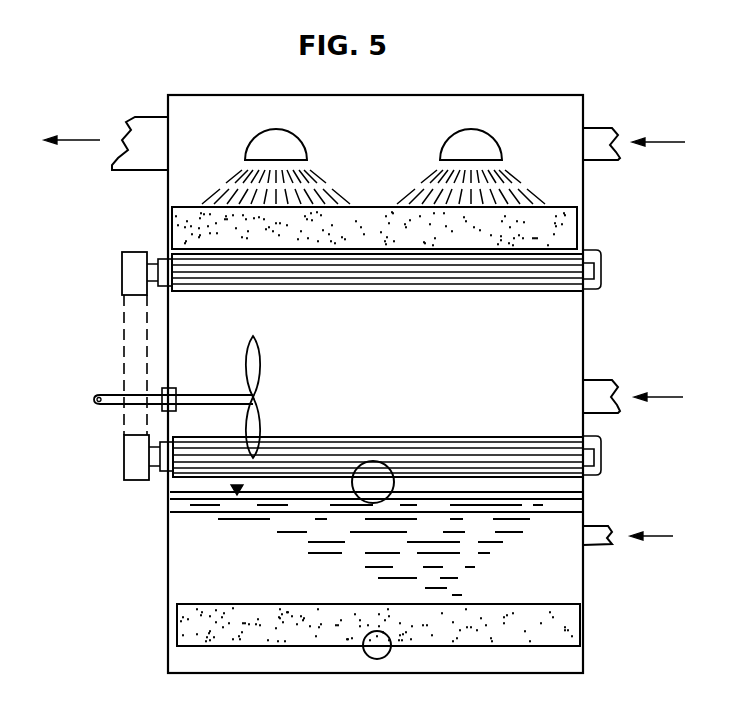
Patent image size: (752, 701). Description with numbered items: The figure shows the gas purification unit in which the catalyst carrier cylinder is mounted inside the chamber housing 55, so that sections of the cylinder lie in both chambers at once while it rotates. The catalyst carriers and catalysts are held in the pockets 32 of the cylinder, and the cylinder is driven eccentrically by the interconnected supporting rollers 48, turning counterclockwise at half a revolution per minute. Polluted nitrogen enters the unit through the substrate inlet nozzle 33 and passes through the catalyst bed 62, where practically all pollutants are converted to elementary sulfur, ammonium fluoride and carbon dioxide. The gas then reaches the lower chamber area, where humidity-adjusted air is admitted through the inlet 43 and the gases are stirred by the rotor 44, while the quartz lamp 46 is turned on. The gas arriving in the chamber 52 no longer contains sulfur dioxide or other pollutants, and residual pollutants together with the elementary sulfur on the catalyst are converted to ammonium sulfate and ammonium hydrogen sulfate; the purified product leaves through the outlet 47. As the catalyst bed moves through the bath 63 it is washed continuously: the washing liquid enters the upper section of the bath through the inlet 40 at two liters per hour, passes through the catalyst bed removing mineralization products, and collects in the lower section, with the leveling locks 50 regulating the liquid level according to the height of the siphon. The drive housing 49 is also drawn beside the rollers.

The pockets 32 is at (562, 233).
The substrate inlet nozzle 33 is at (603, 128).
The inlet 40 is at (601, 546).
The inlet 43 is at (612, 380).
The rotor 44 is at (248, 364).
The quartz lamp 46 is at (452, 140).
The outlet 47 is at (135, 117).
The supporting rollers 48 is at (565, 292).
The motor 49 is at (122, 320).
The leveling locks 50 is at (575, 490).
The chamber 52 is at (397, 169).
The housing 55 is at (585, 340).
The catalyst bed 62 is at (576, 207).
The bath 63 is at (243, 576).